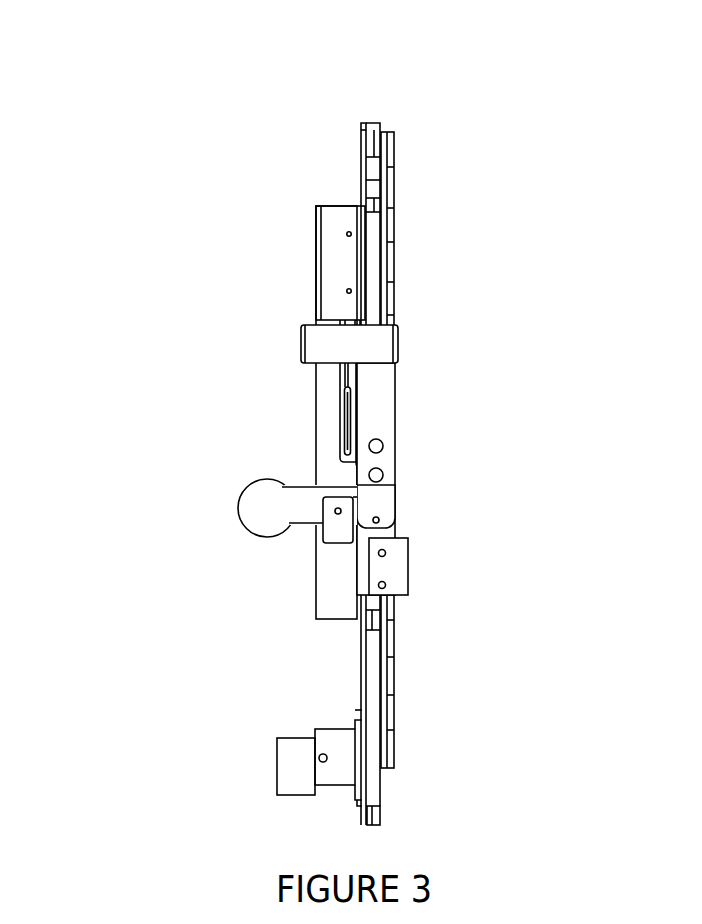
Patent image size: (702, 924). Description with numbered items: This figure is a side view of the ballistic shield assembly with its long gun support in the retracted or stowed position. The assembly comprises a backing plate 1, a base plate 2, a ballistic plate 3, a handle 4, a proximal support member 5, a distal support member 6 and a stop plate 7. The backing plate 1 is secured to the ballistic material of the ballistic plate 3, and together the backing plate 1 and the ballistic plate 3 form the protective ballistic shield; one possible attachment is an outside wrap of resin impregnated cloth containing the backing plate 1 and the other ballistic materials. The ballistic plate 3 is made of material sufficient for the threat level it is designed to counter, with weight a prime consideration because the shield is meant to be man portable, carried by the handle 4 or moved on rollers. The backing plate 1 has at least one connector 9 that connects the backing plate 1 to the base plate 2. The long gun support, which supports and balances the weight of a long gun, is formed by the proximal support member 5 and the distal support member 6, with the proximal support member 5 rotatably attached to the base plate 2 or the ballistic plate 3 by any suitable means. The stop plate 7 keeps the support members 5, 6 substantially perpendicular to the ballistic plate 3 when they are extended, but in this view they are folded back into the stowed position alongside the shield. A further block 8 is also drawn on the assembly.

The backing plate 1 is at (382, 130).
The base plate 2 is at (360, 152).
The ballistic plate 3 is at (389, 147).
The handle 4 is at (257, 503).
The proximal support member 5 is at (374, 503).
The distal support member 6 is at (381, 387).
The stop plate 7 is at (393, 573).
The carriage block 8 is at (310, 338).
The connector 9 is at (368, 150).